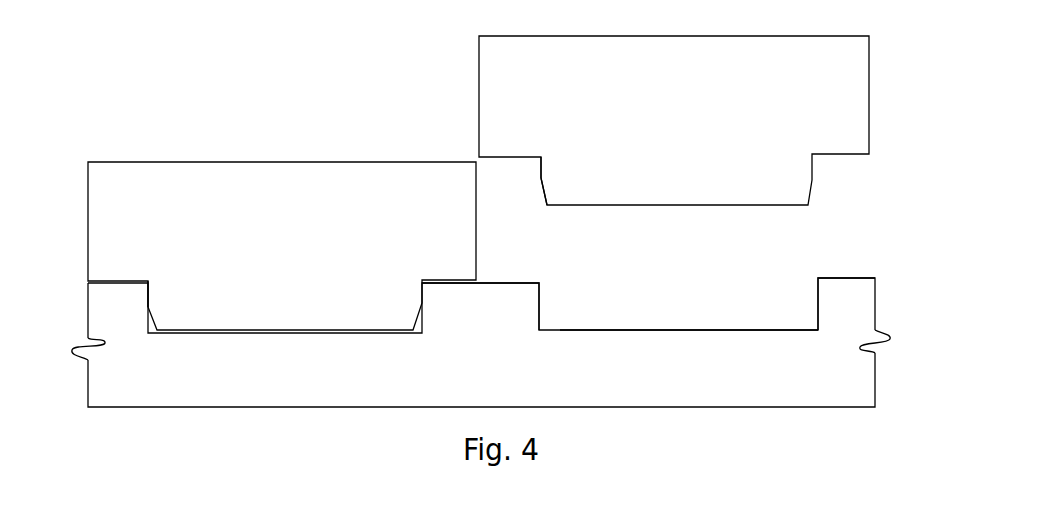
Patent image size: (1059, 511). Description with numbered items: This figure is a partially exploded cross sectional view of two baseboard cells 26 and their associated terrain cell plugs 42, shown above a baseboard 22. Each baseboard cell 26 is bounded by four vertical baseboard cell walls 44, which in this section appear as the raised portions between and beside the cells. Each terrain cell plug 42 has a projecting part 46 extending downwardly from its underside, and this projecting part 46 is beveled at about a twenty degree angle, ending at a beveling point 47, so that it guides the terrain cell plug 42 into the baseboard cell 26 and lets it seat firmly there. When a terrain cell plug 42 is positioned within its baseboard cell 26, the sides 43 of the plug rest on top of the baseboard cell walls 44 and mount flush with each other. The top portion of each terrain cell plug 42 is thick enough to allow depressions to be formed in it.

The substrate 22 is at (613, 407).
The baseboard cell 26 is at (672, 320).
The terrain cell plug 42 is at (839, 68).
The sides of the terrain cell plug 43 is at (479, 79).
The vertical baseboard cell wall 44 is at (540, 300).
The projecting part 46 is at (541, 173).
The beveling point 47 is at (542, 193).